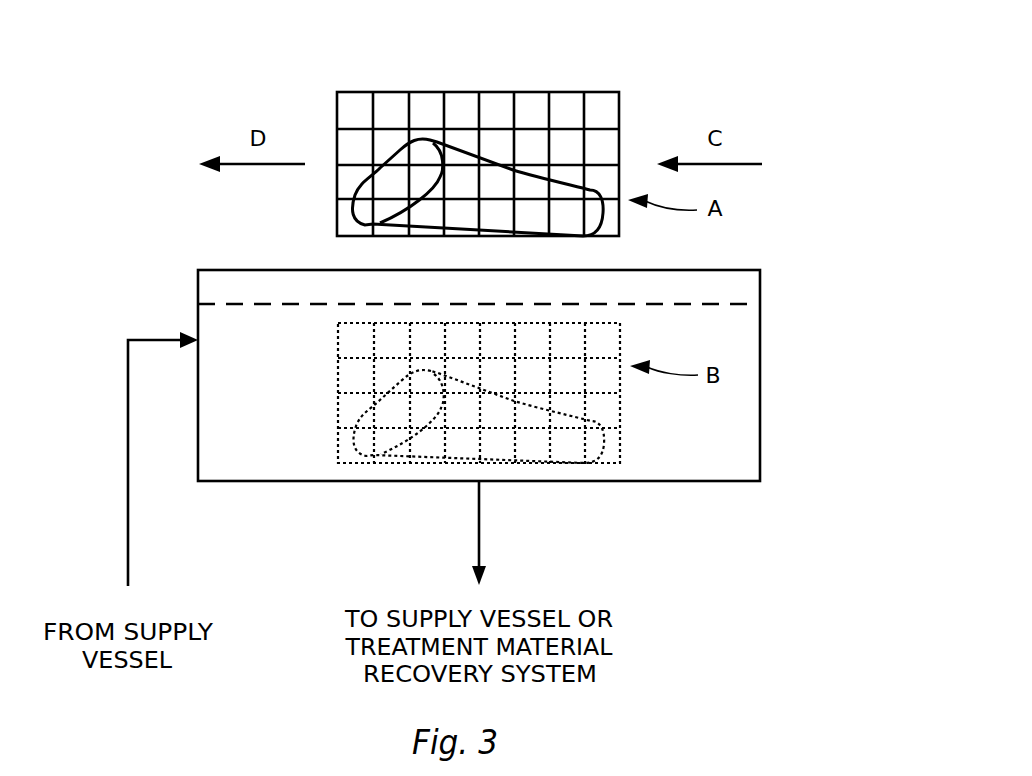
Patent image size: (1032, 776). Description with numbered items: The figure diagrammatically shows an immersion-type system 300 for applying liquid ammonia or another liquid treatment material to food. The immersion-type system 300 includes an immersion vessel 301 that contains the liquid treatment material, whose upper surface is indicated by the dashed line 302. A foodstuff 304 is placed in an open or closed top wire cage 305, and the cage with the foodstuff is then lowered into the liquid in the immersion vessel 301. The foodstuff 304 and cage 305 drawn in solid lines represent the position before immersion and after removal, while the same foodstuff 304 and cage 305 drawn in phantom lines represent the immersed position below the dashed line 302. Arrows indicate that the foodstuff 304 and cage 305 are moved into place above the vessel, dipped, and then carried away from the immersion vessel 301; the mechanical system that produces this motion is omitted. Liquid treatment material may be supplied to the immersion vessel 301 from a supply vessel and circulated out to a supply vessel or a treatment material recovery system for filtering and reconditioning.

The immersion-type system 300 is at (705, 535).
The immersion vessel 301 is at (760, 375).
The dashed line 302 is at (235, 305).
The foodstuff 304 is at (523, 170).
The wire cage 305 is at (337, 190).